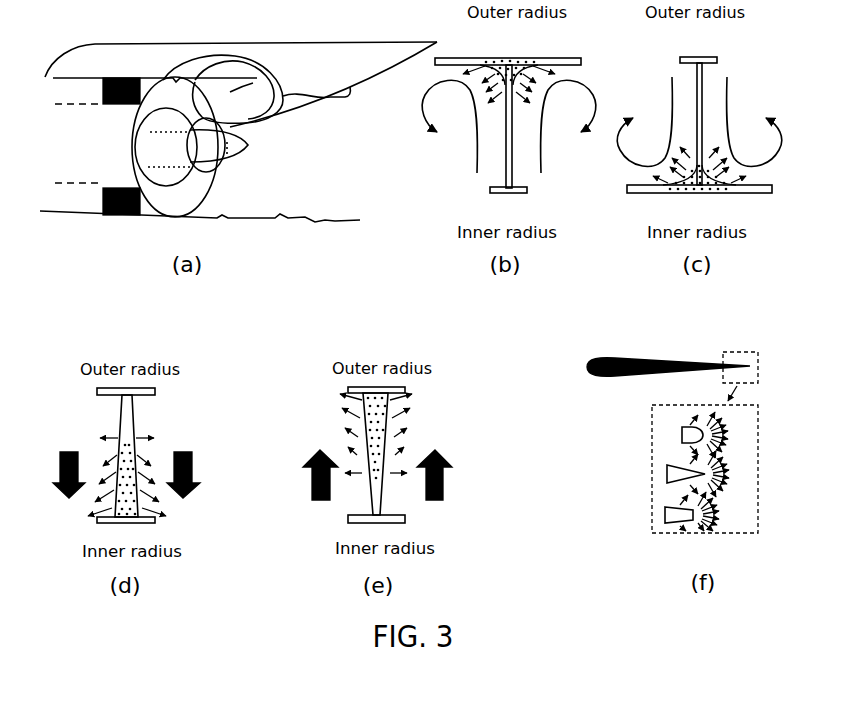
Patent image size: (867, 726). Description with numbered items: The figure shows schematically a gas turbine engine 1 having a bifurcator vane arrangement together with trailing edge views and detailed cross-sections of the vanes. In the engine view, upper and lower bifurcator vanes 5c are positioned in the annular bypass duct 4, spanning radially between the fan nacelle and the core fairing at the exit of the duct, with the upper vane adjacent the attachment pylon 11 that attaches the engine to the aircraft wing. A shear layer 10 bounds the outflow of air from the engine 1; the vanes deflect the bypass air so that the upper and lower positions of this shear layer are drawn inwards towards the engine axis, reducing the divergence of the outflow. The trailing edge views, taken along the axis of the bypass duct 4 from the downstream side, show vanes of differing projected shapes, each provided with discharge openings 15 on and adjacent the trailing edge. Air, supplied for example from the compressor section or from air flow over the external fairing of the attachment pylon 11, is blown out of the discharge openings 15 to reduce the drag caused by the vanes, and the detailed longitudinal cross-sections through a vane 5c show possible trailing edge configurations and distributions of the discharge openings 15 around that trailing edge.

The gas turbine engine 1 is at (97, 231).
The annular bypass duct 4 is at (190, 147).
The bifurcator vanes 5c is at (122, 78).
The shear layer 10 is at (307, 218).
The attachment pylon 11 is at (241, 84).
The discharge openings 15 is at (524, 58).